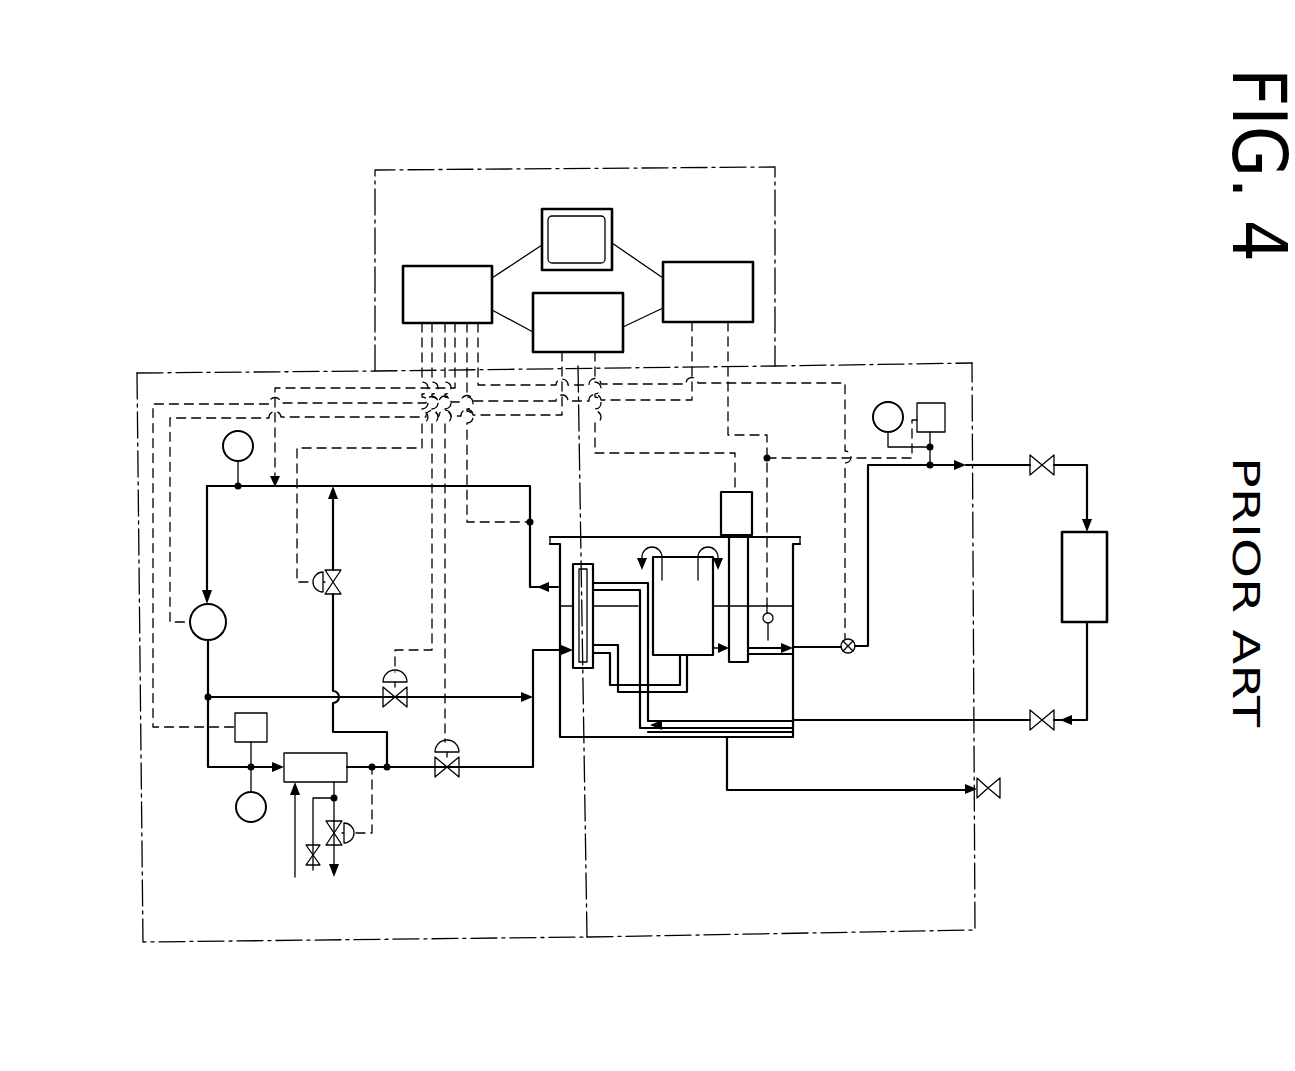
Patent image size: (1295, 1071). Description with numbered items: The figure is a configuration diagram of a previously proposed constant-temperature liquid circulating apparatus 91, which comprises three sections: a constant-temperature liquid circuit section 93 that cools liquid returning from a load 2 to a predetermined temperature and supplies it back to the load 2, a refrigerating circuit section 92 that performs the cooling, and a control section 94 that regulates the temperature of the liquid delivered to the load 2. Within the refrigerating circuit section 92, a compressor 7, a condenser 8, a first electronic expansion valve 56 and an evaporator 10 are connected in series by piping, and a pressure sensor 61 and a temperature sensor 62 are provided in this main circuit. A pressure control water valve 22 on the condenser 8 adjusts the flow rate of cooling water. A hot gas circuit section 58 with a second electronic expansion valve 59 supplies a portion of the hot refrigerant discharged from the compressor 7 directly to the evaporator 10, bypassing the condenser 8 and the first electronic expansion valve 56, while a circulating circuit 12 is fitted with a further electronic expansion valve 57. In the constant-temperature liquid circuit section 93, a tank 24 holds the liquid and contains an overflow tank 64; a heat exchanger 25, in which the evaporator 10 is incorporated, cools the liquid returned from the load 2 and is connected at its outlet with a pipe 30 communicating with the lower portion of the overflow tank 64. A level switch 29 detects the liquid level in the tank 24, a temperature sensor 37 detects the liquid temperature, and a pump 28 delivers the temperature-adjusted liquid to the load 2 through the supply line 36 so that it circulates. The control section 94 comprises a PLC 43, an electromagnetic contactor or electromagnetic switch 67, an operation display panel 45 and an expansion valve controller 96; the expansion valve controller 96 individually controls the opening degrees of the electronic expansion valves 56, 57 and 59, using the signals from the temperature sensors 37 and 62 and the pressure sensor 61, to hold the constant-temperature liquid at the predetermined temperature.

The constant-temperature liquid circulating apparatus 91 is at (962, 186).
The refrigerating circuit section 92 is at (157, 369).
The constant-temperature liquid circuit section 93 is at (979, 403).
The control section 94 is at (783, 252).
The operation display panel 45 is at (577, 239).
The expansion valve controller 96 is at (447, 294).
The electromagnetic contactor/electromagnetic switch 67 is at (578, 322).
The PLC 43 is at (708, 292).
The temperature sensor 62 is at (275, 488).
The pressure sensor 61 is at (533, 519).
The compressor 7 is at (200, 640).
The circulating circuit 12 is at (336, 625).
The electronic expansion valve 57 is at (318, 590).
The hot gas circuit section 58 is at (256, 697).
The condenser 8 is at (314, 753).
The pressure control water valve 22 is at (355, 845).
The second electronic expansion valve 59 is at (397, 707).
The first electronic expansion valve 56 is at (448, 780).
The tank 24 is at (782, 682).
The evaporator 10 is at (573, 668).
The heat exchanger 25 is at (588, 668).
The pipe 30 is at (628, 693).
The overflow tank 64 is at (655, 595).
The pump 28 is at (722, 497).
The level switch 29 is at (776, 616).
The temperature sensor 37 is at (855, 652).
The supply line 36 is at (868, 580).
The load 2 is at (917, 665).